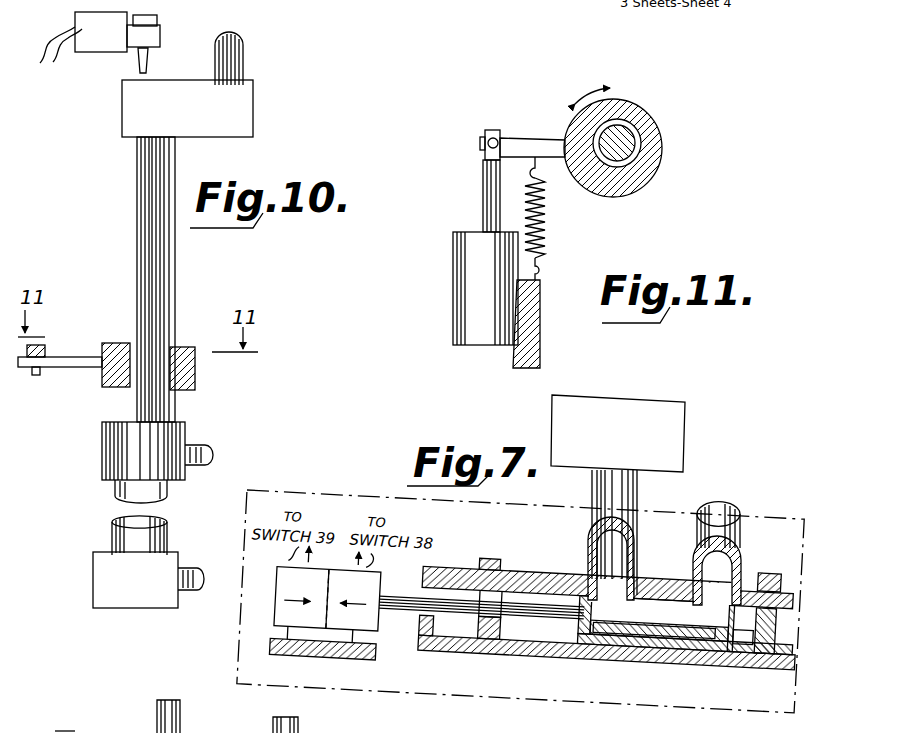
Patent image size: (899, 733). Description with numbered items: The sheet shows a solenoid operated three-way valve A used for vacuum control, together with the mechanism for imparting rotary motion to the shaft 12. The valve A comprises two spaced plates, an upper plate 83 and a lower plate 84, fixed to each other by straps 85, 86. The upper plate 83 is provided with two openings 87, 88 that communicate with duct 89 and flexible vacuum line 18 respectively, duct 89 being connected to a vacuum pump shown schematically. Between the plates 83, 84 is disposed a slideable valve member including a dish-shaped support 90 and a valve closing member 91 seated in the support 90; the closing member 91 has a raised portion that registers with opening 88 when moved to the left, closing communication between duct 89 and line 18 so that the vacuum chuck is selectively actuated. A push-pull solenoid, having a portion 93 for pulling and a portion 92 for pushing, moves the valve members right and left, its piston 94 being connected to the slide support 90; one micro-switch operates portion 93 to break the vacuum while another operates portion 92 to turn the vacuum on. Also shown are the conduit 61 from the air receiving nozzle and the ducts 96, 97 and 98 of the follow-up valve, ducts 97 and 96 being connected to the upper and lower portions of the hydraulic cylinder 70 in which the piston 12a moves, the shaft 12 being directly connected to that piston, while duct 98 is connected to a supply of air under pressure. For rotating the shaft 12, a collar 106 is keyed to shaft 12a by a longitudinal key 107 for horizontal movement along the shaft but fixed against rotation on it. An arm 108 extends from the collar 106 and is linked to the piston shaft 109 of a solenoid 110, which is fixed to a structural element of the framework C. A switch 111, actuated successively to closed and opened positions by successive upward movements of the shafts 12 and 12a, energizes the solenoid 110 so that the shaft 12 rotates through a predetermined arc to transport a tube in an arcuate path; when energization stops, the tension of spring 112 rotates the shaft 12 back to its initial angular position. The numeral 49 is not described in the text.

In FIG. 10, the switch 111 is at (100, 43).
In FIG. 10, the shaft 12 is at (237, 60).
In FIG. 10, the piston 12a is at (140, 181).
In FIG. 11, the piston 12a is at (615, 143).
In FIG. 10, the collar 106 is at (118, 343).
In FIG. 11, the collar 106 is at (650, 155).
In FIG. 10, the arm 108 is at (68, 370).
In FIG. 11, the arm 108 is at (515, 138).
In FIG. 10, the piston shaft 109 is at (40, 351).
In FIG. 11, the piston shaft 109 is at (485, 194).
In FIG. 10, the duct 97 is at (200, 446).
In FIG. 10, the hydraulic cylinder 70 is at (115, 533).
In FIG. 10, the duct 96 is at (192, 569).
In FIG. 10, the conduit 61 is at (181, 726).
In FIG. 10, the duct 98 is at (300, 725).
In FIG. 11, the longitudinal key 107 is at (625, 120).
In FIG. 11, the solenoid 110 is at (462, 298).
In FIG. 11, the spring 112 is at (545, 229).
In FIG. 11, the framework C is at (540, 316).
In FIG. 7, the duct 89 is at (592, 489).
In FIG. 7, the flexible vacuum line 18 is at (736, 513).
In FIG. 7, the opening 87 is at (595, 600).
In FIG. 7, the opening 88 is at (703, 600).
In FIG. 7, the upper plate 83 is at (525, 561).
In FIG. 7, the strap 85 is at (492, 546).
In FIG. 7, the lower plate 84 is at (458, 639).
In FIG. 7, the strap 86 is at (772, 546).
In FIG. 7, the dish-shaped support 90 is at (783, 613).
In FIG. 7, the valve closing member 91 is at (717, 608).
In FIG. 7, the solenoid pushing portion 92 is at (289, 588).
In FIG. 7, the solenoid pulling portion 93 is at (370, 579).
In FIG. 7, the piston 94 is at (411, 604).
In FIG. 7, the three-way valve A is at (536, 682).
In FIG. 7, the element 49 is at (684, 732).